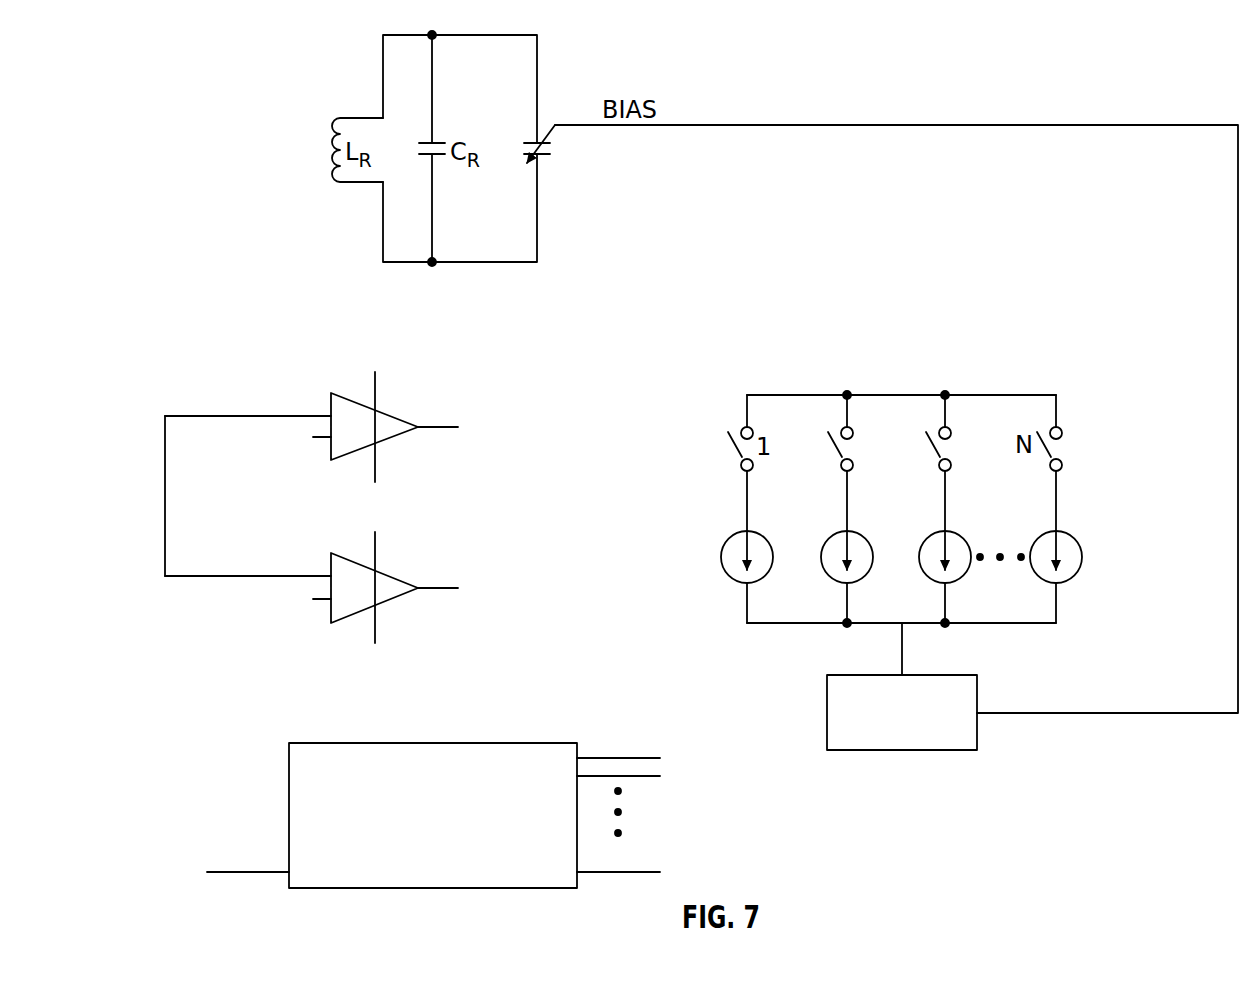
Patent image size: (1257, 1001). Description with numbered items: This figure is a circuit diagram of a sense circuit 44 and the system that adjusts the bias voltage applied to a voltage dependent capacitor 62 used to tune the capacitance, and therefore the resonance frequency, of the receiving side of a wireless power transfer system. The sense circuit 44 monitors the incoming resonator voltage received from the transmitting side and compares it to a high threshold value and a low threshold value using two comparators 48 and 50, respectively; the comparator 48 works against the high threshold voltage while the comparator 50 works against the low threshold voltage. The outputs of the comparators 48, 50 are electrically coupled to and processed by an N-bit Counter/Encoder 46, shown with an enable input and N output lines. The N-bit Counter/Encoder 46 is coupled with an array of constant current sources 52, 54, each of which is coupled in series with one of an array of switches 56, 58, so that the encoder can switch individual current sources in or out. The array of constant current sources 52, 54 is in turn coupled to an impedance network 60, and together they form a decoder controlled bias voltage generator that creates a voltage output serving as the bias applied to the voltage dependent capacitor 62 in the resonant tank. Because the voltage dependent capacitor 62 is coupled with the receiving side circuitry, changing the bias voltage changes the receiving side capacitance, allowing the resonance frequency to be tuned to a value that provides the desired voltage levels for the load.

The sense circuit 44 is at (332, 507).
The N-bit Counter/Encoder 46 is at (337, 743).
The comparator 48 is at (395, 415).
The comparator 50 is at (395, 575).
The constant current source 52 is at (738, 532).
The constant current source 54 is at (838, 532).
The switch 56 is at (733, 450).
The switch 58 is at (832, 450).
The impedance network 60 is at (930, 750).
The voltage dependent capacitor 62 is at (543, 158).